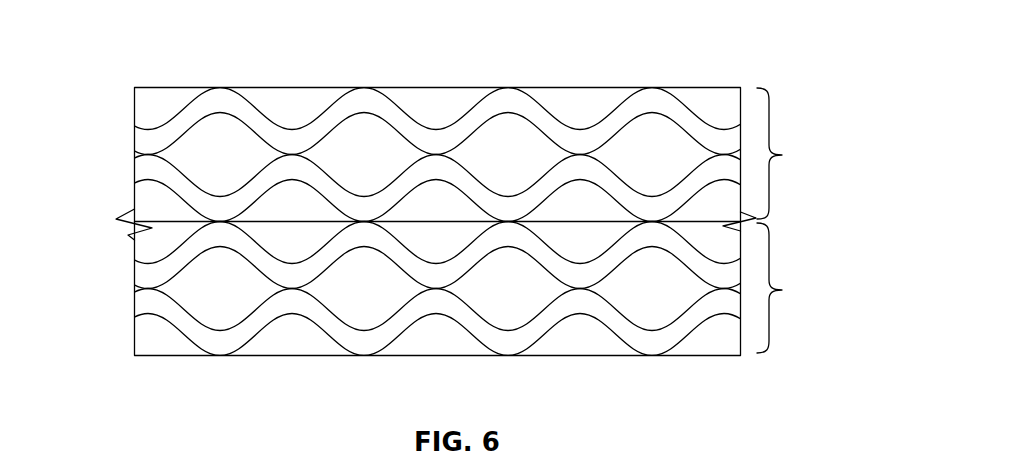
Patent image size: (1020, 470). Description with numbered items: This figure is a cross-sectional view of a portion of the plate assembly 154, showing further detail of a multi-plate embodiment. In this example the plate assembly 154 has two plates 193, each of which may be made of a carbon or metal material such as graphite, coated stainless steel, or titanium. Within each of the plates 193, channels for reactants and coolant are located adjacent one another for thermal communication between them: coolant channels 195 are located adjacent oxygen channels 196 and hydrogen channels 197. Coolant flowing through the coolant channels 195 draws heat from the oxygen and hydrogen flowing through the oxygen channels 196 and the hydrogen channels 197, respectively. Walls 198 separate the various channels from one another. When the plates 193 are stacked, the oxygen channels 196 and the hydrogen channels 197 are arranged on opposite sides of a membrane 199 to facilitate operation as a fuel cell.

The plate assembly 154 is at (740, 55).
The plate 193 is at (789, 220).
The coolant channel 195 is at (199, 165).
The oxygen channel 196 is at (273, 116).
The hydrogen channel 197 is at (273, 214).
The wall 198 is at (410, 182).
The membrane 199 is at (150, 235).